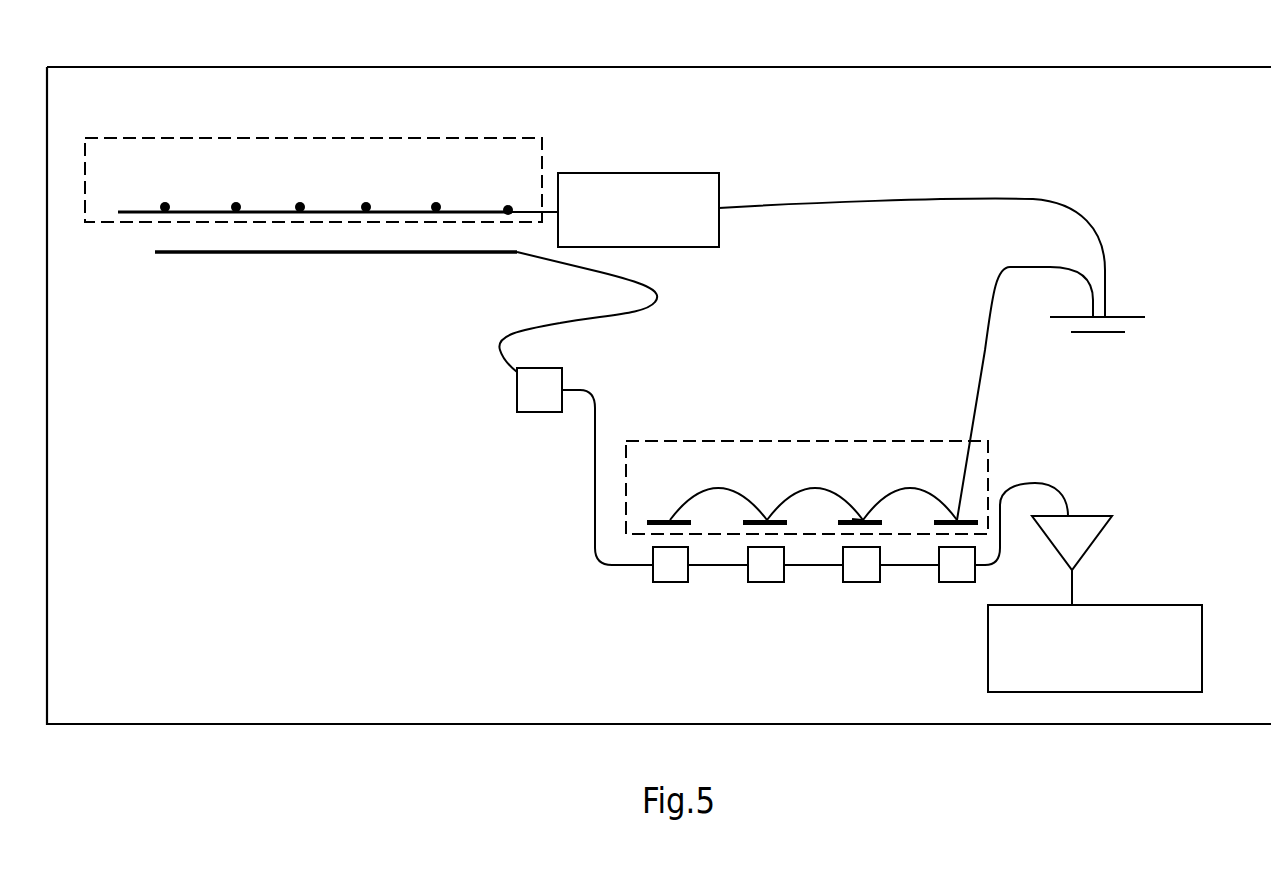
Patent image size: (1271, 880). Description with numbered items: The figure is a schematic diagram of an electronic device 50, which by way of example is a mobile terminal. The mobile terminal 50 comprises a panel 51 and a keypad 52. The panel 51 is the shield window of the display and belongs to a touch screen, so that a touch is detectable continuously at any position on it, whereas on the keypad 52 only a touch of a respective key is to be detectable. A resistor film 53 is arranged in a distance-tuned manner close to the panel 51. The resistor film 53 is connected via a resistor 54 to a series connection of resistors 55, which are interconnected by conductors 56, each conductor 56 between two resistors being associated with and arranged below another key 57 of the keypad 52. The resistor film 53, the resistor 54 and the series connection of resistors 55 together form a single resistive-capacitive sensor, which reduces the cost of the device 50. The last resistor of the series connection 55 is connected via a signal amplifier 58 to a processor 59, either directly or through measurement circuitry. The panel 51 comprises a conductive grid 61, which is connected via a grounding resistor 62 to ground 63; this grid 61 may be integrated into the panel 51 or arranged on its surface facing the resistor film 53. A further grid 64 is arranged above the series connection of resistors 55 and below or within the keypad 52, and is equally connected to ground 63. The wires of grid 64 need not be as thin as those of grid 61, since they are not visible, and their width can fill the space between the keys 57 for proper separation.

The electronic device 50 is at (835, 67).
The panel 51 is at (282, 138).
The keypad 52 is at (912, 441).
The resistor film 53 is at (207, 253).
The resistor 54 is at (517, 405).
The series connection of resistors 55 is at (661, 583).
The conductor 56 is at (720, 569).
The key 57 is at (813, 487).
The signal amplifier 58 is at (1097, 516).
The processor 59 is at (1172, 605).
The conductive grid 61 is at (452, 190).
The grounding resistor 62 is at (673, 173).
The ground 63 is at (1137, 317).
The further grid 64 is at (863, 492).